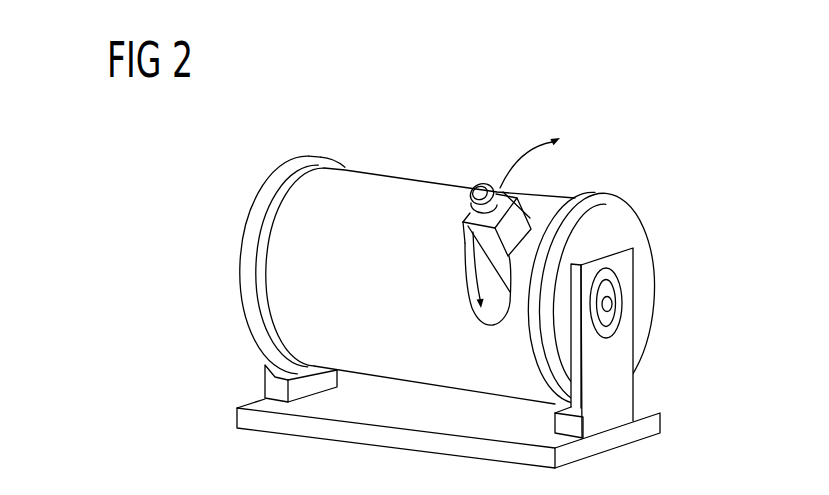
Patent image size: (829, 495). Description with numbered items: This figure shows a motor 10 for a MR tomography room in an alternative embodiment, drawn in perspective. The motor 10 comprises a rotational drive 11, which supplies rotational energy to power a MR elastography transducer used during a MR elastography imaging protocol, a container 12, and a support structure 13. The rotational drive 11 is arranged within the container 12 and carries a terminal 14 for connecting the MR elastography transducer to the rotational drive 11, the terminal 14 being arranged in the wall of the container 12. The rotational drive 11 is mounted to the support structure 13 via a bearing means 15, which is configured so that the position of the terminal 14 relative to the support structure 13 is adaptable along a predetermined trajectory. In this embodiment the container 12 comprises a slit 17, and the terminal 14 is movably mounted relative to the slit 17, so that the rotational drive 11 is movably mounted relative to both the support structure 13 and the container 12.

The motor 10 is at (212, 235).
The rotational drive 11 is at (440, 157).
The container 12 is at (625, 218).
The support structure 13 is at (640, 435).
The terminal 14 is at (513, 214).
The bearing means 15 is at (612, 302).
The slit 17 is at (488, 318).